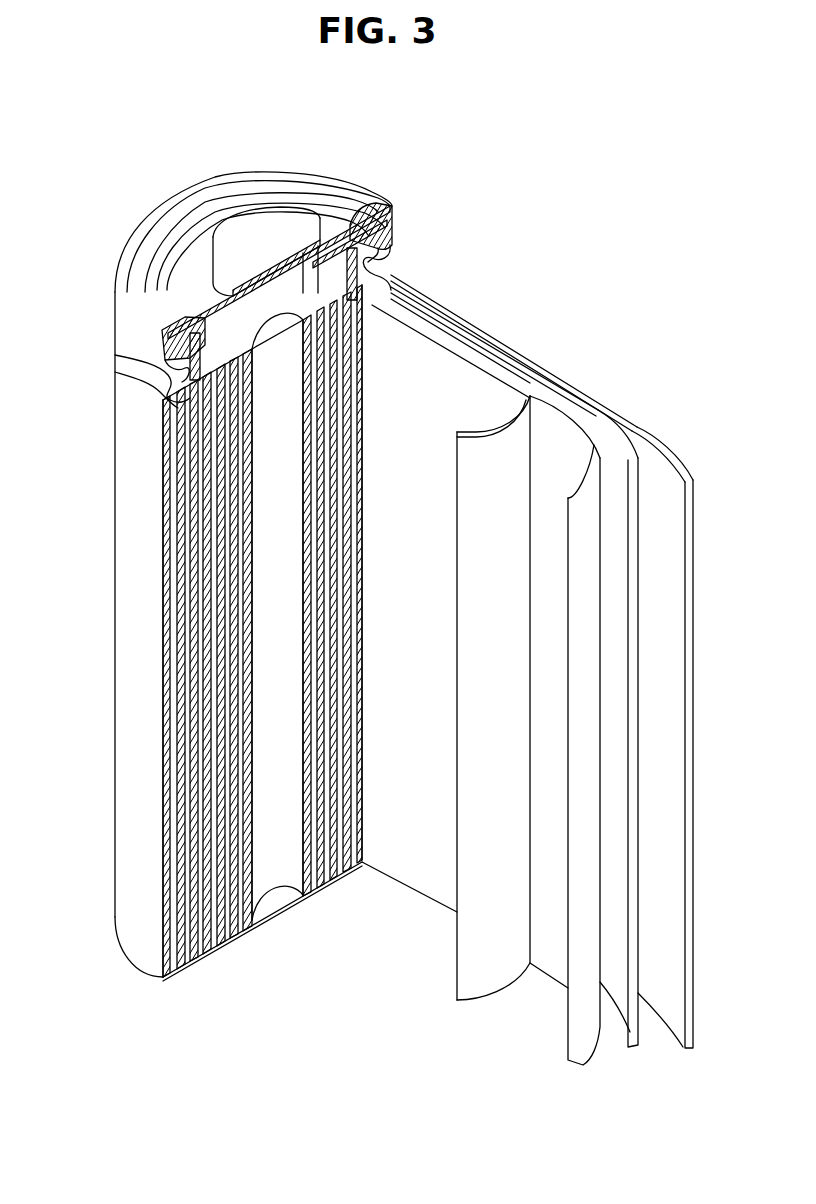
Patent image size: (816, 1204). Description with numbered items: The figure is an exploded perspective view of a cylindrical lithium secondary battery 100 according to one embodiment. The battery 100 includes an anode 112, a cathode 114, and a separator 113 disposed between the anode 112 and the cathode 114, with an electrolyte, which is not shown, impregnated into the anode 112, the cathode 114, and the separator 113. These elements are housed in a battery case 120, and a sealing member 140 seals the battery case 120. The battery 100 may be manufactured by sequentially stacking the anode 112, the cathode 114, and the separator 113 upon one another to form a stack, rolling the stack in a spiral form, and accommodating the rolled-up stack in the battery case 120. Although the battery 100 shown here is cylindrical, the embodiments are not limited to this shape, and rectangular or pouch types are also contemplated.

The lithium secondary battery 100 is at (346, 111).
The anode 112 is at (667, 448).
The separator 113 is at (493, 437).
The cathode 114 is at (587, 443).
The battery case 120 is at (121, 626).
The sealing member 140 is at (244, 222).